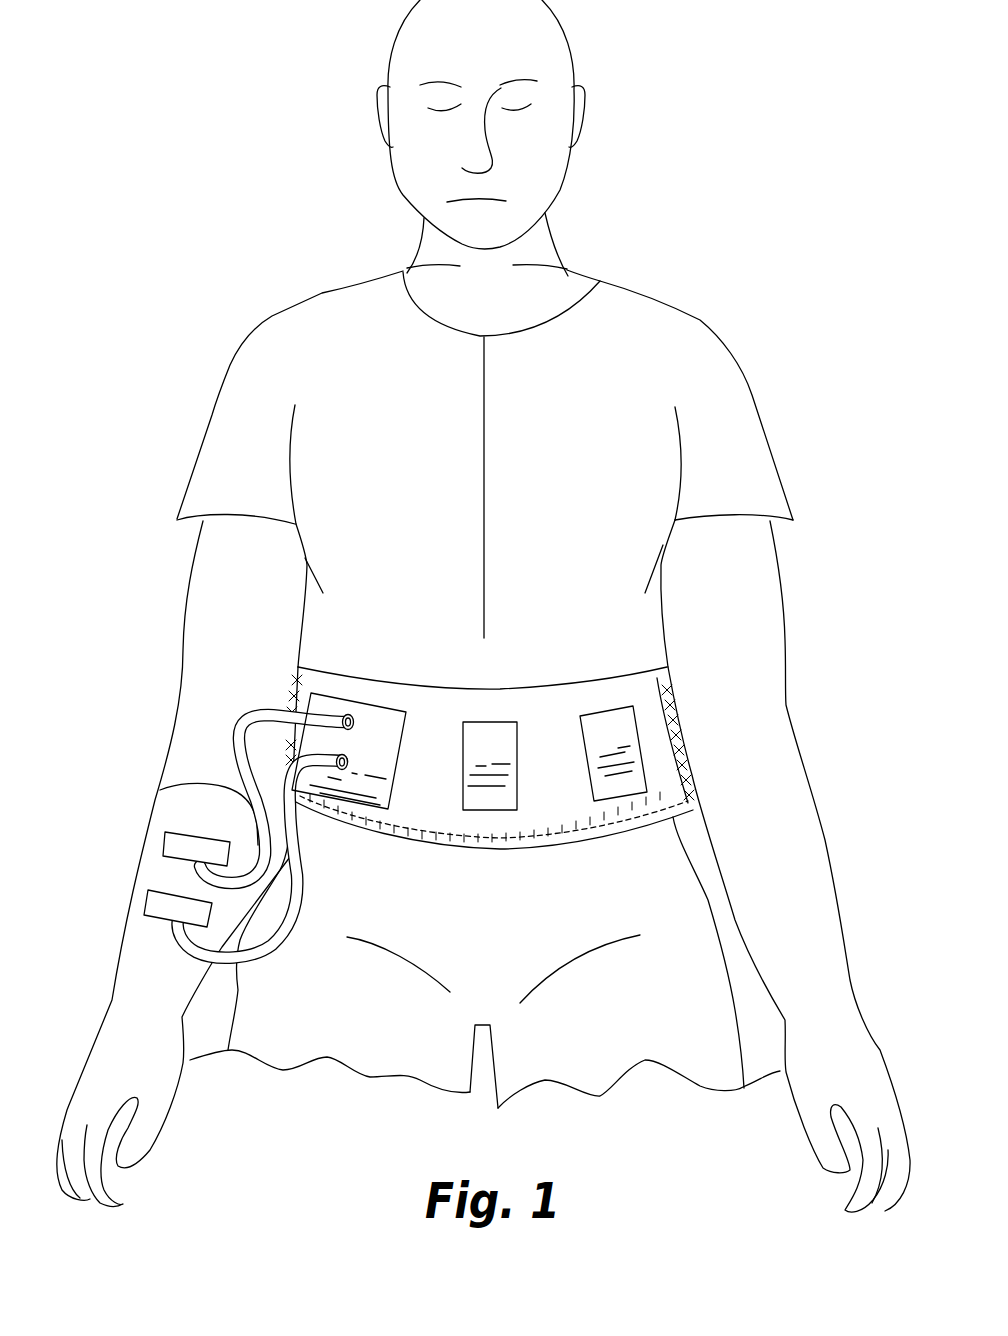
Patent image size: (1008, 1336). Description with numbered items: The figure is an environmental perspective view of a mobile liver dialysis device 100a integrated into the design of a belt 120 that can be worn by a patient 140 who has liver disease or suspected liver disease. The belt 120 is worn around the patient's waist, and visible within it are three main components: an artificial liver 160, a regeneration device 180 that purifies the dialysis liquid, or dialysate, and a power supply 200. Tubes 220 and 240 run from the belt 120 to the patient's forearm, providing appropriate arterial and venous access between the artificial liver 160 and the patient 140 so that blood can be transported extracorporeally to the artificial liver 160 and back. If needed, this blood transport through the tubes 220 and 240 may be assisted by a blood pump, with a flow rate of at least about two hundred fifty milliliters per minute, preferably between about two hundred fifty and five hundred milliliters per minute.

The liver dialysis device 100a is at (620, 636).
The belt 120 is at (297, 666).
The patient 140 is at (314, 294).
The artificial liver 160 is at (377, 714).
The regeneration device 180 is at (493, 733).
The power supply 200 is at (630, 722).
The tube 220 is at (177, 940).
The tube 240 is at (160, 790).